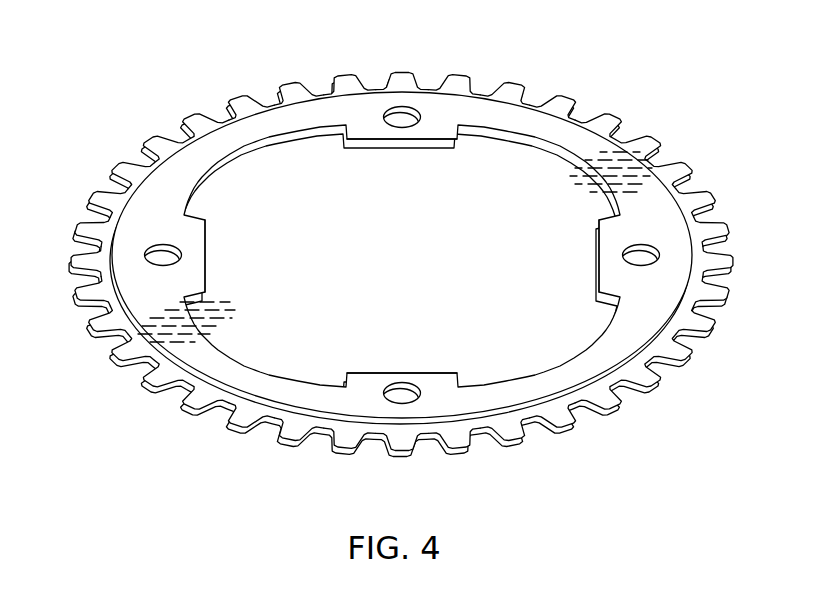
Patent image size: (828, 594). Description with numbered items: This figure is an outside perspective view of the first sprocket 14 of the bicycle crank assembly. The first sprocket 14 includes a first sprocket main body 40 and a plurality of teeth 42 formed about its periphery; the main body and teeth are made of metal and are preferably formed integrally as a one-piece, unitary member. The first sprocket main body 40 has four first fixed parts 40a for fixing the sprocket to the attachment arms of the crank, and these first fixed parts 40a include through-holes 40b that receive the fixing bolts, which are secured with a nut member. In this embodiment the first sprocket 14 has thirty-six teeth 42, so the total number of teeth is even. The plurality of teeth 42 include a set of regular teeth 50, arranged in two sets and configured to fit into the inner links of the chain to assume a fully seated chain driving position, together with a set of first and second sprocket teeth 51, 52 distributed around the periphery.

The first sprocket 14 is at (624, 47).
The first sprocket main body 40 is at (246, 133).
The first fixed parts 40a is at (441, 128).
The through-holes 40b is at (387, 122).
The teeth 42 is at (224, 95).
The regular teeth 50 is at (406, 263).
The first sprocket teeth 51 is at (459, 73).
The second sprocket teeth 52 is at (515, 83).